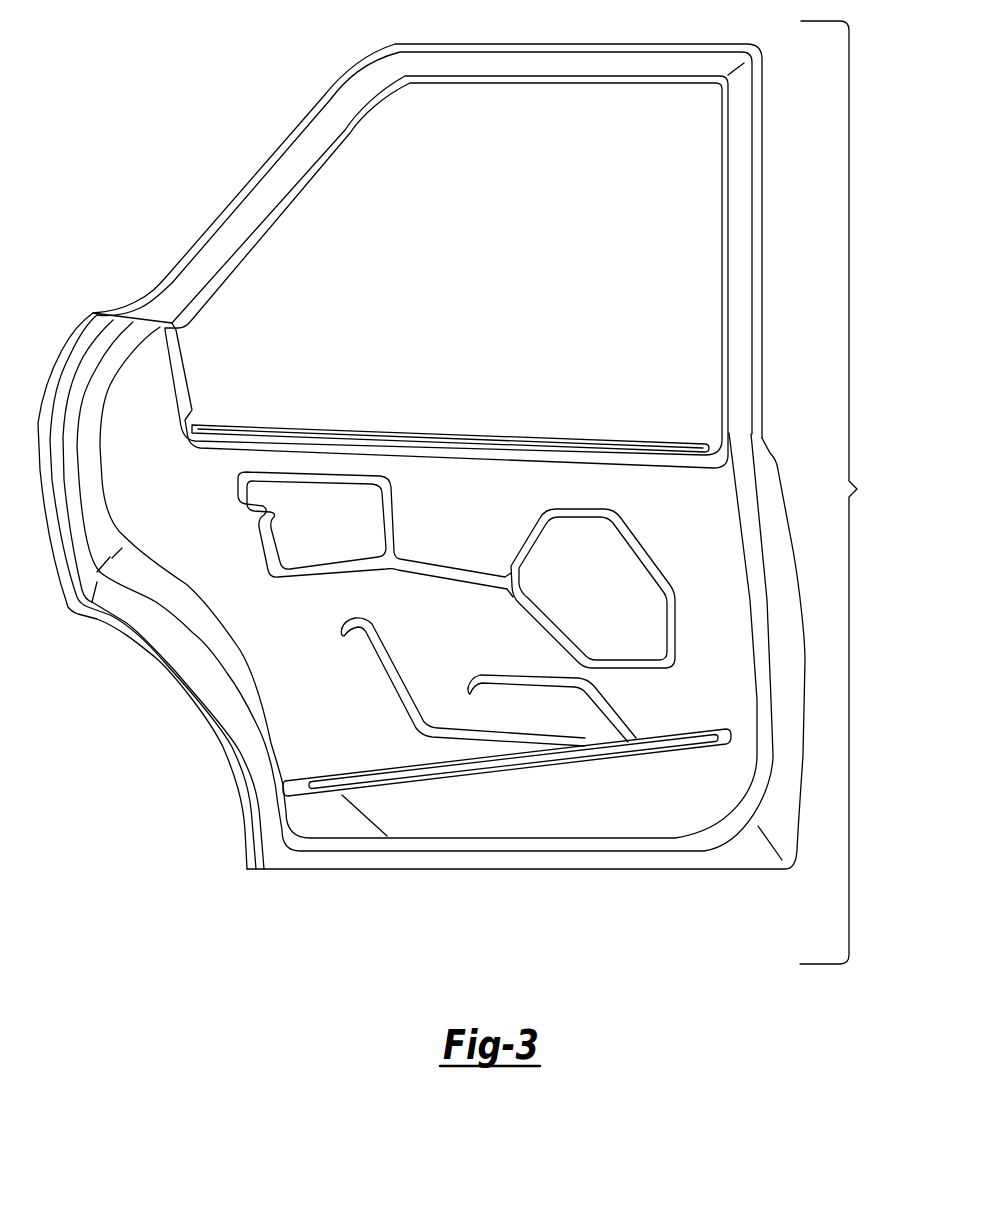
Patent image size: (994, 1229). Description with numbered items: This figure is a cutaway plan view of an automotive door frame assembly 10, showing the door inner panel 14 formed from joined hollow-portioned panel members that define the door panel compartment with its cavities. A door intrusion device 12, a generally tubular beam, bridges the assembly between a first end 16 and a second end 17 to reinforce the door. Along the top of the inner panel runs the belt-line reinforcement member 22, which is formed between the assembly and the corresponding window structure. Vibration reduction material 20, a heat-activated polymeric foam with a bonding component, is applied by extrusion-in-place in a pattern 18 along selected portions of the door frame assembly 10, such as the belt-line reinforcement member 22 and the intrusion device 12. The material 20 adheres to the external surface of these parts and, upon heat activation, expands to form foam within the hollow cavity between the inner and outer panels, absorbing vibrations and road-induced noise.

The door frame assembly 10 is at (493, 492).
The door intrusion device 12 is at (700, 732).
The door inner panel 14 is at (440, 485).
The first end 16 is at (738, 764).
The second end 17 is at (310, 811).
The pattern 18 is at (392, 756).
The vibration reduction material 20 is at (515, 443).
The belt-line reinforcement member 22 is at (610, 443).